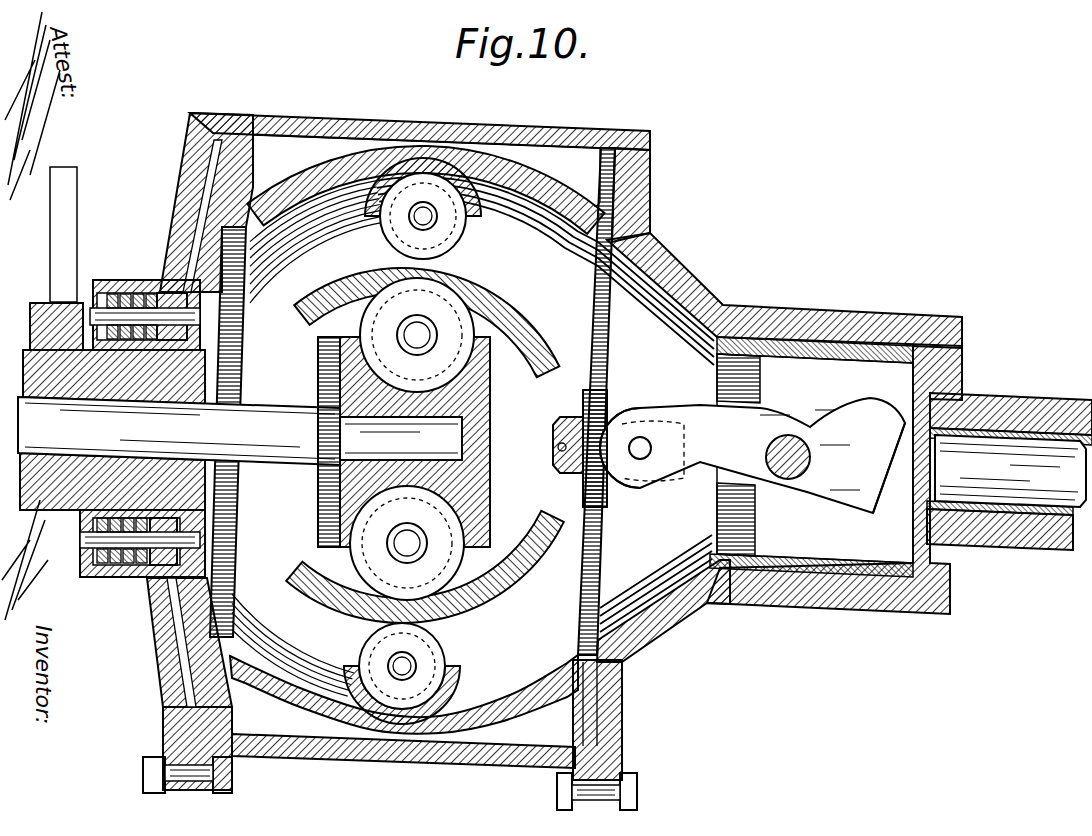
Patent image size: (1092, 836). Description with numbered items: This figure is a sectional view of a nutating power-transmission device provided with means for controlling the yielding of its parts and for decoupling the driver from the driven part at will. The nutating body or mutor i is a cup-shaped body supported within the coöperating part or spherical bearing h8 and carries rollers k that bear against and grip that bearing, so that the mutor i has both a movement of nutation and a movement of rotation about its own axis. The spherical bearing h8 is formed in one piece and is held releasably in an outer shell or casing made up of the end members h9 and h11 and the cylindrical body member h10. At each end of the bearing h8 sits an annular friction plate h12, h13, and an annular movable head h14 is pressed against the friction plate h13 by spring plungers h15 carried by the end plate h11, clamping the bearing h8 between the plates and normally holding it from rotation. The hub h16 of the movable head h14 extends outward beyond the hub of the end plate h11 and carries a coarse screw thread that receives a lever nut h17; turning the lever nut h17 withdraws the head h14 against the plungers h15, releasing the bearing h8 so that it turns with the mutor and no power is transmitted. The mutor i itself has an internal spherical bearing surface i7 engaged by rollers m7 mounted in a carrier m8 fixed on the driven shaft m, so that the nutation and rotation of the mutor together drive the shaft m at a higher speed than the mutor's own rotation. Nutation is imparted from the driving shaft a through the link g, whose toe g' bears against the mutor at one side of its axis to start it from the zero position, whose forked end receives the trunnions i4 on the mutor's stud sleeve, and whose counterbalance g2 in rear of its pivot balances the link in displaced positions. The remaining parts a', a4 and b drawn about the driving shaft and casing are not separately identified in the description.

The cylindrical body member h10 is at (392, 120).
The end member h11 is at (188, 197).
The annular friction plate h12 is at (612, 207).
The annular friction plate h13 is at (260, 158).
The annular movable head h14 is at (207, 263).
The spring plungers h15 is at (133, 312).
The hub of the movable head h16 is at (160, 372).
The lever nut h17 is at (55, 335).
The coöperating part or spherical bearing h8 is at (560, 205).
The end member h9 is at (657, 262).
The nutating body or mutor i is at (540, 312).
The internal spherical bearing surface i7 is at (547, 530).
The trunnions i4 is at (640, 458).
The rollers k is at (412, 441).
The driven shaft m is at (179, 431).
The rollers m7 is at (412, 439).
The carrier m8 is at (478, 388).
The link g is at (752, 455).
The toe g' is at (642, 425).
The counterbalance g2 is at (835, 468).
The driving shaft a is at (1010, 513).
The shaft bearing housing a' is at (1003, 487).
The chamber a4 is at (815, 458).
The casing bottom wall b is at (913, 612).